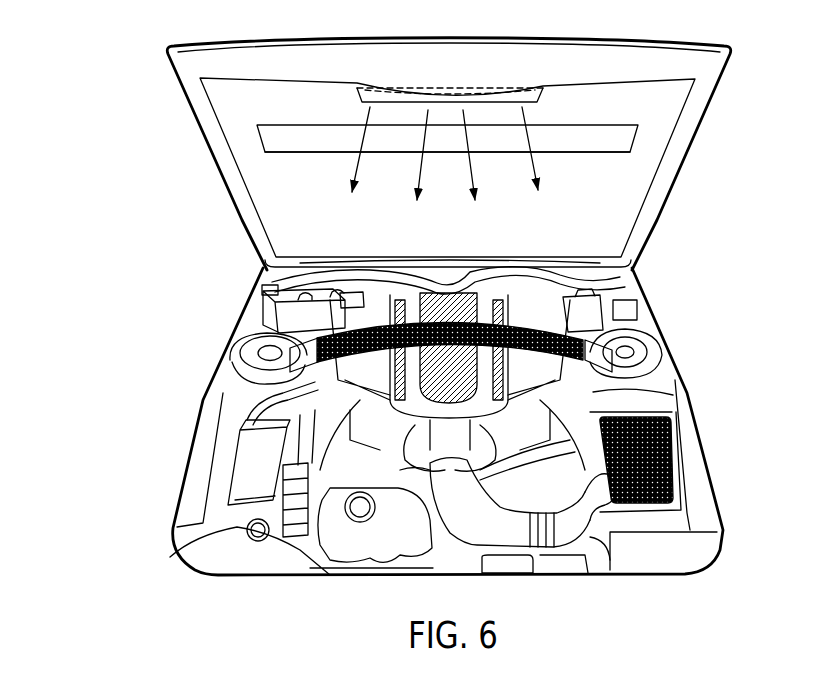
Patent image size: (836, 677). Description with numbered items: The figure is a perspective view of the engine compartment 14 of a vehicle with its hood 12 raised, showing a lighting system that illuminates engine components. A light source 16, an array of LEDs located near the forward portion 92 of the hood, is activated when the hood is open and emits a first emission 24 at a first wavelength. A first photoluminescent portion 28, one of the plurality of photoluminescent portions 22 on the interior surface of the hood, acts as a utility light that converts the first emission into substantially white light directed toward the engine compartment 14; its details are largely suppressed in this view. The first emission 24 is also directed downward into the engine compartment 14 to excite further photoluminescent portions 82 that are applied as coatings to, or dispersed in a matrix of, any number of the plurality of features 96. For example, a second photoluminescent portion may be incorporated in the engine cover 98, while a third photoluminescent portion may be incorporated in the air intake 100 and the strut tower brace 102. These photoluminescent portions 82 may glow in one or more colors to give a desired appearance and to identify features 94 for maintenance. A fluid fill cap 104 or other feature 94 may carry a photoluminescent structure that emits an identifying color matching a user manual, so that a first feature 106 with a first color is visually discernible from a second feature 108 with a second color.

The hood 12 is at (177, 132).
The engine compartment 14 is at (185, 364).
The light source 16 is at (473, 88).
The plurality of photoluminescent portions 22 is at (630, 135).
The first emission 24 is at (418, 175).
The first photoluminescent portion 28 is at (627, 145).
The photoluminescent portions 82 is at (577, 265).
The forward portion 92 is at (394, 74).
The features 94 is at (263, 288).
The plurality of features 96 is at (435, 442).
The engine cover 98 is at (377, 389).
The air intake 100 is at (670, 453).
The strut tower brace 102 is at (620, 340).
The fluid fill cap 104 is at (237, 549).
The first feature 106 is at (247, 531).
The second feature 108 is at (357, 508).